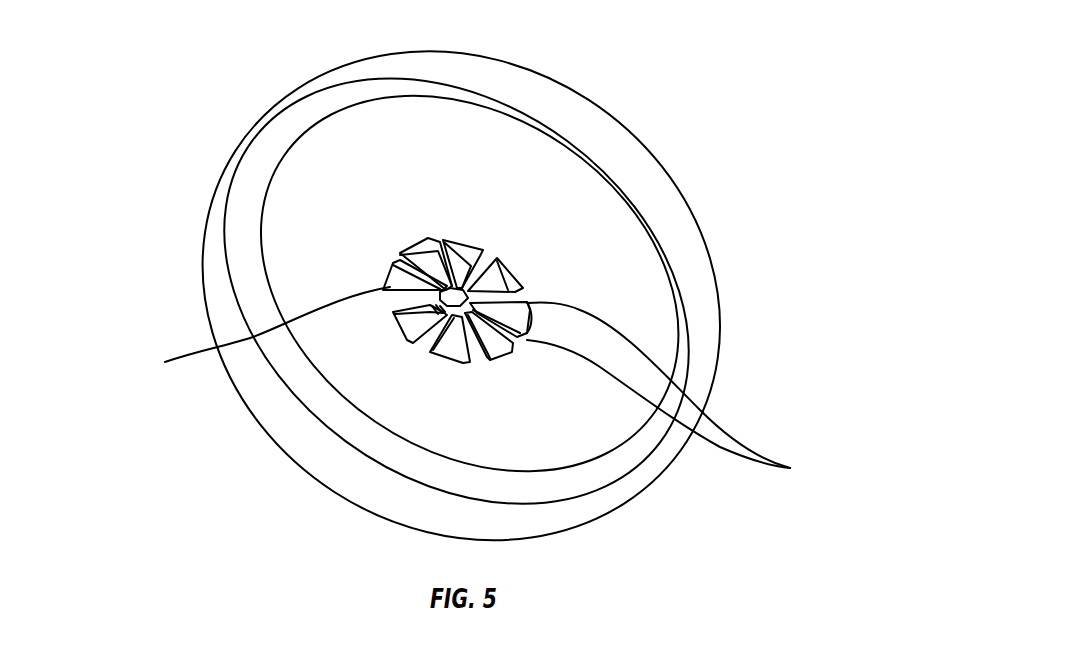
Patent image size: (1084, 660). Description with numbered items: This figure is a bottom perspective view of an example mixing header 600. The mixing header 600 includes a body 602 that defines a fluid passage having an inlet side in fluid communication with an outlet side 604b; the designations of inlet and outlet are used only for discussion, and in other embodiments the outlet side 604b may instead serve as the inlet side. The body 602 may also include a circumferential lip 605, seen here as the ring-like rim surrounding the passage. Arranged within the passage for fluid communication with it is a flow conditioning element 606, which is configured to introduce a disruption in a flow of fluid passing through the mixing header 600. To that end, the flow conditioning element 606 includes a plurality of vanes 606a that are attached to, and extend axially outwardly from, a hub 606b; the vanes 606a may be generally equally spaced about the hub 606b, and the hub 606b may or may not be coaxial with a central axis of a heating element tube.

The mixing header 600 is at (758, 103).
The body 602 is at (735, 295).
The outlet side 604b is at (500, 225).
The circumferential lip 605 is at (640, 176).
The flow conditioning element 606 is at (393, 240).
The vanes 606a is at (686, 394).
The hub 606b is at (253, 331).